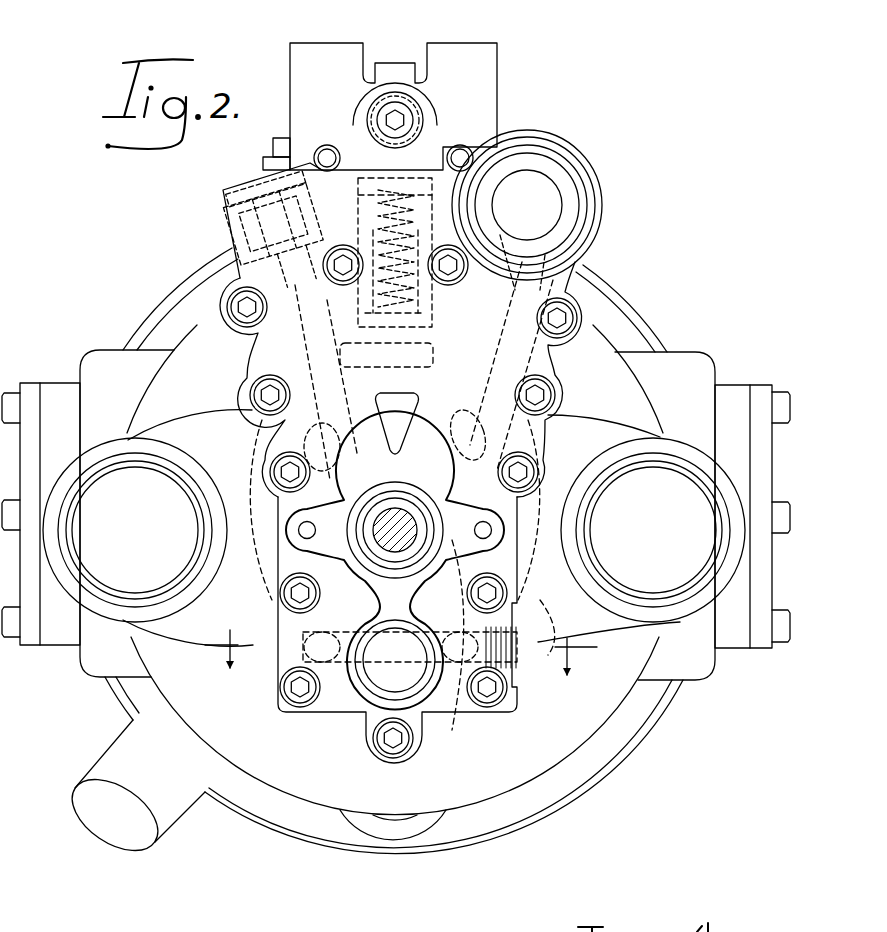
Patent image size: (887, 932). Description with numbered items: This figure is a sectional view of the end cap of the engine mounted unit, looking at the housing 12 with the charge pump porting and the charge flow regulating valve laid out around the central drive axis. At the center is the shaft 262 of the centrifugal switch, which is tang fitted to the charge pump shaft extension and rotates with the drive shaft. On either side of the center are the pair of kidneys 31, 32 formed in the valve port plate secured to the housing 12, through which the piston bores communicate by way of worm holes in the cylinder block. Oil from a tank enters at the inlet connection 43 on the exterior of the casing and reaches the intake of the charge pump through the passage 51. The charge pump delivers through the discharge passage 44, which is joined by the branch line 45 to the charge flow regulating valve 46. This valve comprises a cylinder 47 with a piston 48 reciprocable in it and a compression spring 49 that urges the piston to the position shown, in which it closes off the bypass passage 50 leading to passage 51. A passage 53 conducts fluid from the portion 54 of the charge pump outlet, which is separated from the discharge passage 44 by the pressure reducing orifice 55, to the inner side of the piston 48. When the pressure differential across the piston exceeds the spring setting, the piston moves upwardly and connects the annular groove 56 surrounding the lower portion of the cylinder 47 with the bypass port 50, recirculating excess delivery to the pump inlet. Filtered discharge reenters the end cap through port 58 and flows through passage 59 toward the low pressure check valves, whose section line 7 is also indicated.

The section line 7- 7 is at (397, 662).
The housing 12 is at (420, 826).
The kidney 31 is at (258, 574).
The kidney 32 is at (530, 585).
The inlet connection 43 is at (546, 194).
The discharge passage 44 is at (300, 345).
The branch line 45 is at (400, 366).
The charge flow regulating valve 46 is at (436, 204).
The cylinder 47 is at (470, 200).
The piston 48 is at (543, 236).
The compression spring 49 is at (392, 205).
The bypass passage 50 is at (450, 340).
The passage 51 is at (545, 360).
The passage 53 is at (281, 220).
The portion of the charge pump outlet 54 is at (268, 288).
The pressure reducing orifice 55 is at (287, 336).
The annular groove 56 is at (369, 357).
The port 58 is at (383, 673).
The passage 59 is at (453, 732).
The shaft 262 is at (405, 540).